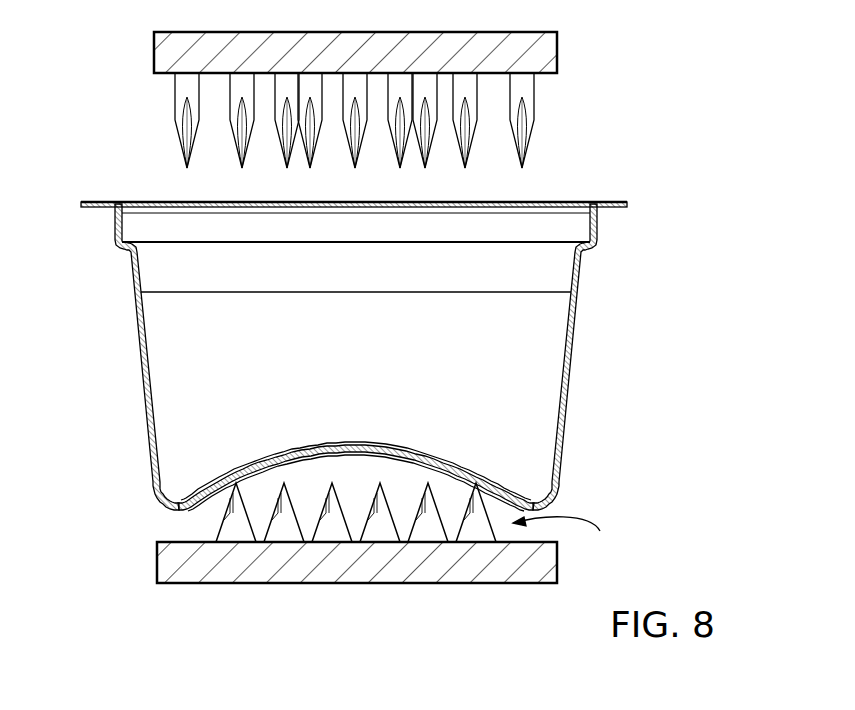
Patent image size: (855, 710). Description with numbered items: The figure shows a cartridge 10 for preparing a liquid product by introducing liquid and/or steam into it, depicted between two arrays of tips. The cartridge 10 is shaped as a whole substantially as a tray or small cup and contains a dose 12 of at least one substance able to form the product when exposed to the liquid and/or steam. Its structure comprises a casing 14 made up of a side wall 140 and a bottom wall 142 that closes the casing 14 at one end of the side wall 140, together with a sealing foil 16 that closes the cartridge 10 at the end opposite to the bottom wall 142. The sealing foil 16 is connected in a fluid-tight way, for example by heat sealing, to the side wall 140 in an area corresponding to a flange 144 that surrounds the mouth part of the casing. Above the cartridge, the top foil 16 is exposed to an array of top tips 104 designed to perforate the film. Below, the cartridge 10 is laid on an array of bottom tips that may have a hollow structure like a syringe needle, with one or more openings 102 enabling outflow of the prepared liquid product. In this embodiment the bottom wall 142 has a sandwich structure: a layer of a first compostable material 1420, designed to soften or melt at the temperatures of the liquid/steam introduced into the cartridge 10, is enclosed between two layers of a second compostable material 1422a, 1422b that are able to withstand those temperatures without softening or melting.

The cartridge 10 is at (461, 98).
The dose 12 is at (188, 354).
The casing 14 is at (391, 402).
The sealing foil 16 is at (167, 202).
The openings 102 is at (272, 520).
The top tips 104 is at (490, 157).
The side wall 140 is at (573, 340).
The bottom wall 142 is at (311, 518).
The flange 144 is at (610, 213).
The layer of first compostable material 1420 is at (367, 444).
The layer of second compostable material 1422a is at (247, 463).
The layer of second compostable material 1422b is at (407, 462).